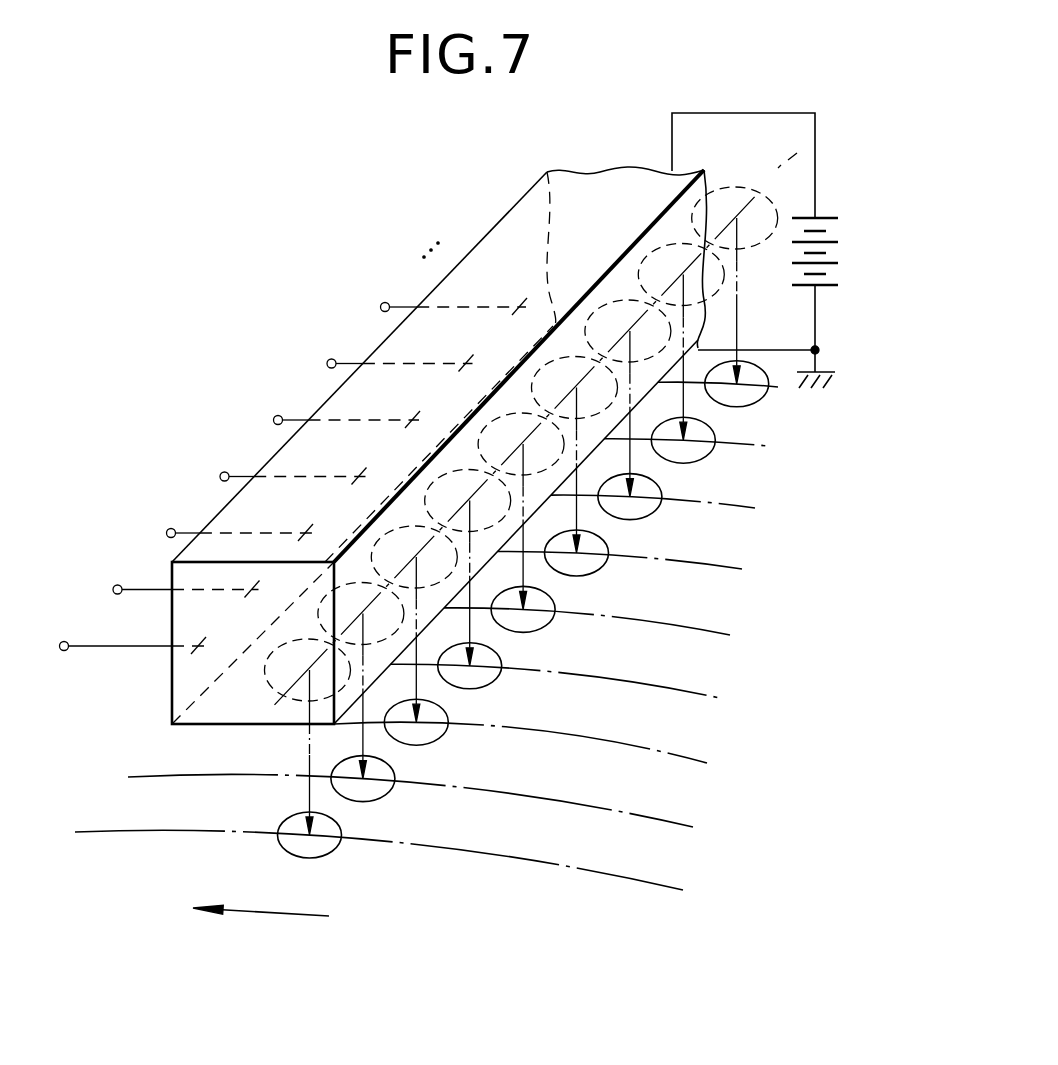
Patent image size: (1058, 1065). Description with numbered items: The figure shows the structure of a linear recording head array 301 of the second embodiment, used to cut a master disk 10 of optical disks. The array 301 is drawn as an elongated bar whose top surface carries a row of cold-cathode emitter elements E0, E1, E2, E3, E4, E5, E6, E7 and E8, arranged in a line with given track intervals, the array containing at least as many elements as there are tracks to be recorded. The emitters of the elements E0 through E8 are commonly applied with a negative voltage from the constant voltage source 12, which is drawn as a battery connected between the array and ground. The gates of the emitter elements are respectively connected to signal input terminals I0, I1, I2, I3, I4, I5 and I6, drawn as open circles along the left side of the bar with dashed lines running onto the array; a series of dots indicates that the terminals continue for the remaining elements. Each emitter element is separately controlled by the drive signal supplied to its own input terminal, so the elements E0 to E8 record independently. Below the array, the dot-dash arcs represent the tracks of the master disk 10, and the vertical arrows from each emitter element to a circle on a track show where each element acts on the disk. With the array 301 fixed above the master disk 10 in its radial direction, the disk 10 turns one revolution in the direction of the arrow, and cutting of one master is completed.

The linear recording head array 301 is at (578, 170).
The constant voltage source 12 is at (838, 215).
The master disk 10 is at (398, 952).
The cold-cathode emitter element E0 is at (308, 737).
The cold-cathode emitter element E1 is at (361, 681).
The cold-cathode emitter element E2 is at (414, 624).
The cold-cathode emitter element E3 is at (468, 568).
The cold-cathode emitter element E4 is at (521, 511).
The cold-cathode emitter element E5 is at (575, 455).
The cold-cathode emitter element E6 is at (628, 398).
The cold-cathode emitter element E7 is at (681, 342).
The cold-cathode emitter element E8 is at (735, 285).
The signal input terminal I0 is at (64, 642).
The signal input terminal I1 is at (118, 585).
The signal input terminal I2 is at (171, 528).
The signal input terminal I3 is at (224, 472).
The signal input terminal I4 is at (278, 416).
The signal input terminal I5 is at (332, 359).
The signal input terminal I6 is at (385, 302).